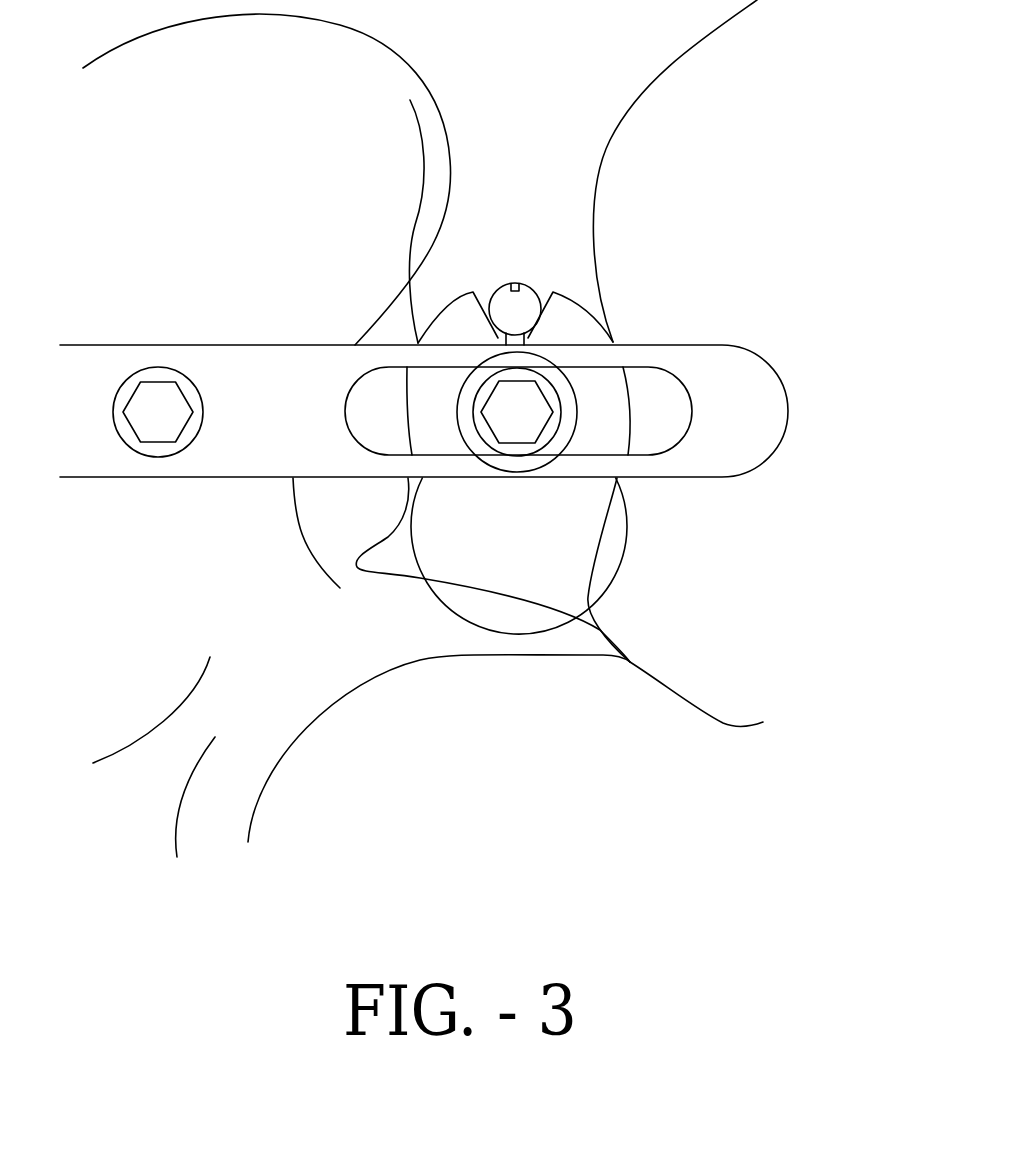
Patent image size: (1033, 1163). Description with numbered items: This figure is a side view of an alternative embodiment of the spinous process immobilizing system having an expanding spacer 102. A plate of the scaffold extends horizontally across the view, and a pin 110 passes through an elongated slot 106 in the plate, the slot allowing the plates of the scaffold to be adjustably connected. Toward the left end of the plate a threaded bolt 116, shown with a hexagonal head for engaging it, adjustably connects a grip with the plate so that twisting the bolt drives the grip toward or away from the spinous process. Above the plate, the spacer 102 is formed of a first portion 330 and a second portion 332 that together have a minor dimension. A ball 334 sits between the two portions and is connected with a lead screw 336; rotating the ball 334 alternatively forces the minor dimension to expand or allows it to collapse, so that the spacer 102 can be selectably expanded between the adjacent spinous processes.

The spacer 102 is at (560, 563).
The slot 106 is at (377, 432).
The pin 110 is at (520, 425).
The threaded bolt 116 is at (155, 403).
The first portion 330 is at (453, 316).
The second portion 332 is at (568, 317).
The ball 334 is at (527, 288).
The lead screw 336 is at (500, 344).